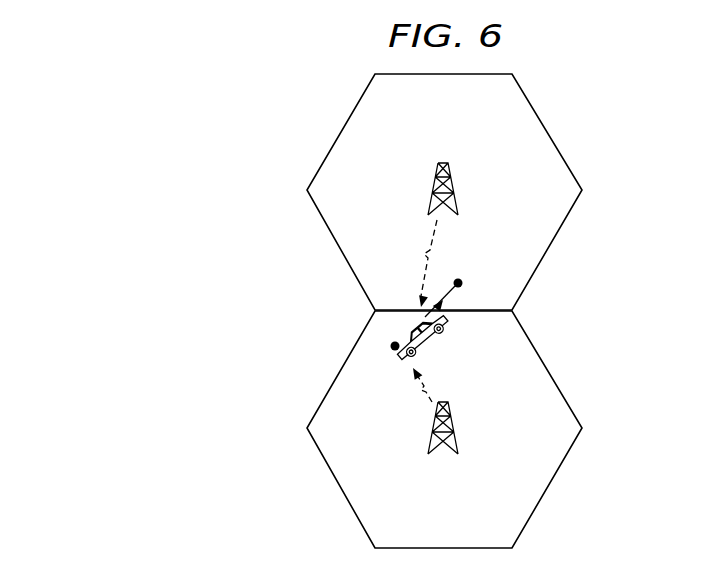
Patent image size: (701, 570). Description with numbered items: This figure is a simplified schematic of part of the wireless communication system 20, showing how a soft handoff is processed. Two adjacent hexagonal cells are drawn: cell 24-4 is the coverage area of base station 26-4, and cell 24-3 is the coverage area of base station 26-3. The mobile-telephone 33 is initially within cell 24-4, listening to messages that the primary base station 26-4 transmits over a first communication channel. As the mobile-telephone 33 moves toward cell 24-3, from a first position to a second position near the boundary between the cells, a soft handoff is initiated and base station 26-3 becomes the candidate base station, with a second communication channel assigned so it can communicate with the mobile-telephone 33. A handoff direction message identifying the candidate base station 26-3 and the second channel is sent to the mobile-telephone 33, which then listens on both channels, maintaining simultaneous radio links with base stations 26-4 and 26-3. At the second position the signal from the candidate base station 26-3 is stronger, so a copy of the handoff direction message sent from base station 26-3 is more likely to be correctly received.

The wireless communication system 20 is at (240, 189).
The cell 24-3 is at (561, 125).
The cell 24-4 is at (557, 359).
The base station 26-3 is at (468, 189).
The base station 26-4 is at (468, 426).
The mobile-telephone 33 is at (441, 342).